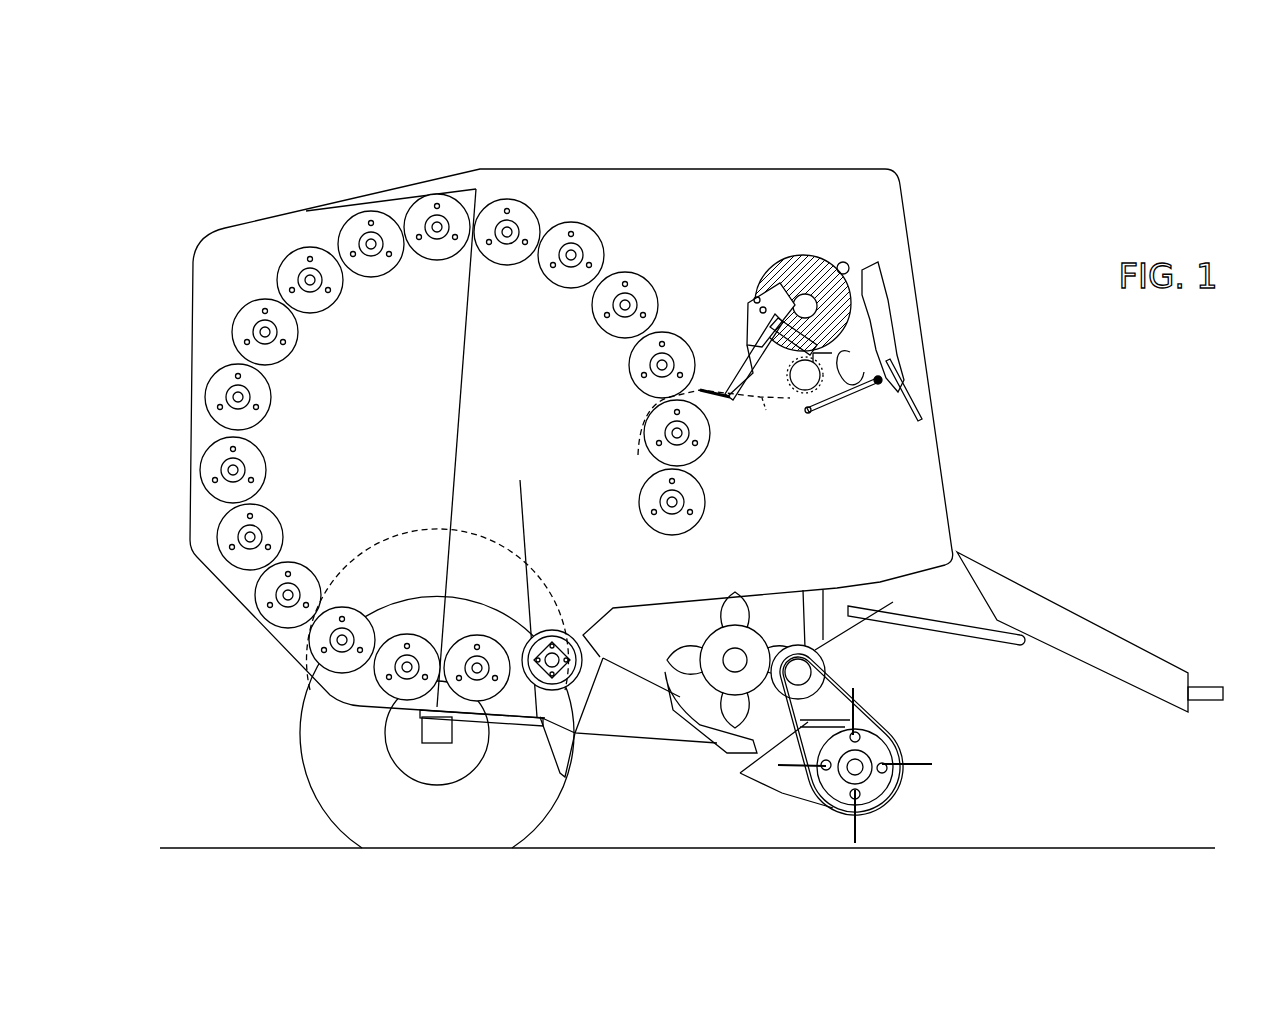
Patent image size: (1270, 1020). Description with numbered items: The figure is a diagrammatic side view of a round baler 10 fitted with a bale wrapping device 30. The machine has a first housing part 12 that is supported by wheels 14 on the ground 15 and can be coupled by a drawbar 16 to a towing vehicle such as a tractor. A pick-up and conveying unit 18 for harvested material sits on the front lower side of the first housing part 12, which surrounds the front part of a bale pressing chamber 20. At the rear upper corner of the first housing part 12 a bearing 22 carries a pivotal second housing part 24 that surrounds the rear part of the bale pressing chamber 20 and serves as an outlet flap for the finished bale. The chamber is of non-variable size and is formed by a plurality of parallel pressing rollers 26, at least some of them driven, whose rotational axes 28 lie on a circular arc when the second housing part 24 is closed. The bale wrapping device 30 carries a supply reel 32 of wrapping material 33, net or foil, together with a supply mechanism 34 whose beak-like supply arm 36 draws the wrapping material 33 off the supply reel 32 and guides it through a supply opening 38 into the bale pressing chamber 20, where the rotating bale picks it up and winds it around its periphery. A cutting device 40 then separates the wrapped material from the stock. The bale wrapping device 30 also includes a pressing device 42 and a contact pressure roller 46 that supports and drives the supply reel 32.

The round baler 10 is at (1035, 184).
The first housing part 12 is at (528, 680).
The wheels 14 is at (463, 827).
The ground 15 is at (237, 848).
The drawbar 16 is at (1038, 617).
The pick-up and conveying unit 18 is at (955, 757).
The bale pressing chamber 20 is at (497, 455).
The bearing 22 is at (476, 189).
The second housing part 24 is at (400, 377).
The pressing rollers 26 is at (600, 245).
The rotational axes 28 is at (572, 250).
The bale wrapping device 30 is at (814, 344).
The supply reel 32 is at (812, 268).
The wrapping material 33 is at (762, 405).
The supply mechanism 34 is at (735, 312).
The supply arm 36 is at (748, 378).
The supply opening 38 is at (718, 420).
The cutting device 40 is at (808, 378).
The pressing device 42 is at (900, 281).
The contact pressure roller 46 is at (812, 385).